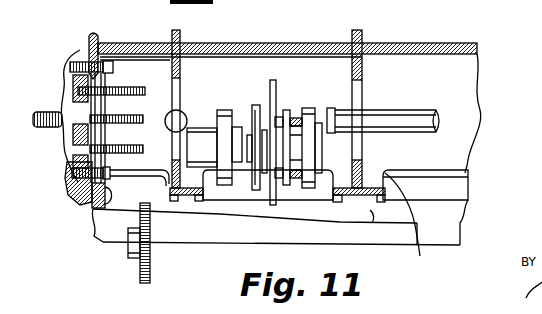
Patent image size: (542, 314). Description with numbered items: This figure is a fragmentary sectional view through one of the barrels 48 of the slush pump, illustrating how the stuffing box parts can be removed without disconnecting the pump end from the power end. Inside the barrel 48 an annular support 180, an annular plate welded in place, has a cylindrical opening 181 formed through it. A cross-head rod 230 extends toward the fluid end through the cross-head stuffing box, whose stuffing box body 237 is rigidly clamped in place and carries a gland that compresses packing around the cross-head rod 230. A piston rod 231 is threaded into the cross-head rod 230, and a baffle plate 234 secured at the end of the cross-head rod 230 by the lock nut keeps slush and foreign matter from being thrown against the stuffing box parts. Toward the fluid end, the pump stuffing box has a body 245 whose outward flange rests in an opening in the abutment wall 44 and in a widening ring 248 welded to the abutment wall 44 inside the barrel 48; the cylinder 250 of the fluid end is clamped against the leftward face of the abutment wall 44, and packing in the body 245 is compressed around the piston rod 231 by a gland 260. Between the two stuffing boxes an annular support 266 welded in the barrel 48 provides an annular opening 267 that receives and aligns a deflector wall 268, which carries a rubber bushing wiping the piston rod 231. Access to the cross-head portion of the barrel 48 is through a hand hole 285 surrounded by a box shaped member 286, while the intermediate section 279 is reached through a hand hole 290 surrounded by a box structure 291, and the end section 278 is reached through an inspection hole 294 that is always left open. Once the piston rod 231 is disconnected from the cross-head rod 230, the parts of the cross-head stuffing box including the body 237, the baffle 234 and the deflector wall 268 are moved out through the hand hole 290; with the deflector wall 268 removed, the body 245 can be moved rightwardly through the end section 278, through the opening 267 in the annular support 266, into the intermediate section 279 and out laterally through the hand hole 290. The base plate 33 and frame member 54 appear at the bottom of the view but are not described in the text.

The abutment wall 44 is at (89, 41).
The widening ring 248 is at (115, 27).
The end section 278 is at (148, 63).
The annular support 266 is at (165, 38).
The intermediate section 279 is at (265, 60).
The barrel 48 is at (313, 44).
The annular support 180 is at (365, 58).
The cylindrical opening 181 is at (362, 80).
The annular opening 267 is at (180, 81).
The deflector wall 268 is at (254, 106).
The baffle plate 234 is at (290, 77).
The body 245 is at (227, 105).
The stuffing box body 237 is at (303, 110).
The cross-head rod 230 is at (410, 112).
The piston rod 231 is at (52, 111).
The cylinder 250 is at (70, 183).
The inspection hole 294 is at (93, 207).
The gland 260 is at (150, 257).
The hand hole 290 is at (212, 177).
The box structure 291 is at (238, 192).
The base plate 33 is at (276, 227).
The frame member 54 is at (381, 225).
The box shaped member 286 is at (433, 190).
The hand hole 285 is at (417, 221).